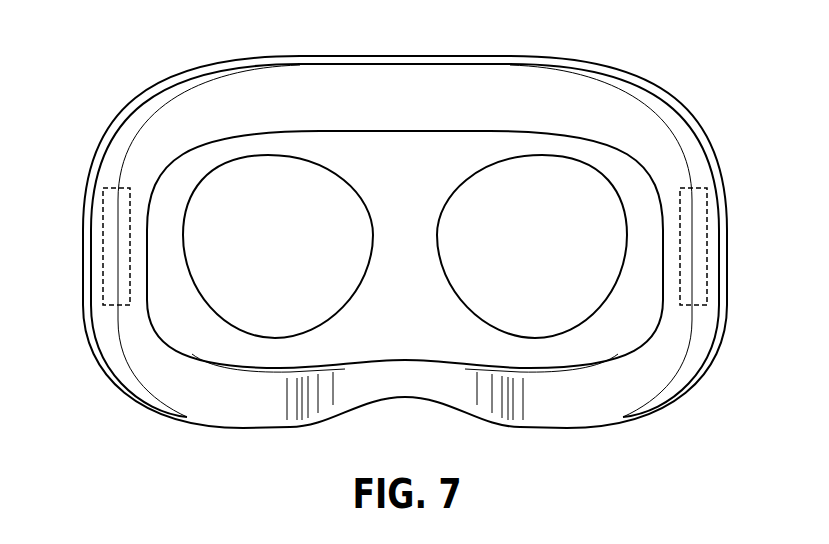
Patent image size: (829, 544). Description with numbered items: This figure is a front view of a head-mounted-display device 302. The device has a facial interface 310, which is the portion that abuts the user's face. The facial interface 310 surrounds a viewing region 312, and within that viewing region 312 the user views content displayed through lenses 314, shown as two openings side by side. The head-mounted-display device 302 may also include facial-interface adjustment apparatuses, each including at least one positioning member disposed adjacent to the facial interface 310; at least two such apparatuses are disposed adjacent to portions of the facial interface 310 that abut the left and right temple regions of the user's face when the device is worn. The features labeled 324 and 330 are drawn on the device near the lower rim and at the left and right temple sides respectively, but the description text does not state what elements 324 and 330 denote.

The head-mounted-display device 302 is at (92, 76).
The facial interface 310 is at (653, 408).
The viewing region 312 is at (633, 175).
The lenses 314 is at (283, 154).
The lower rim with vents 324 is at (578, 402).
The sensors 330 is at (103, 231).